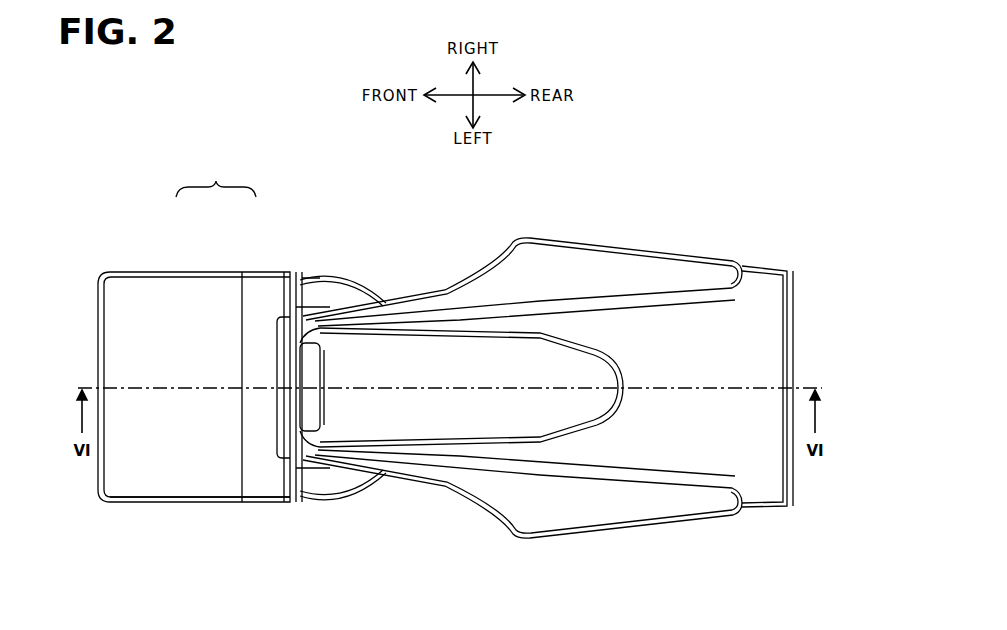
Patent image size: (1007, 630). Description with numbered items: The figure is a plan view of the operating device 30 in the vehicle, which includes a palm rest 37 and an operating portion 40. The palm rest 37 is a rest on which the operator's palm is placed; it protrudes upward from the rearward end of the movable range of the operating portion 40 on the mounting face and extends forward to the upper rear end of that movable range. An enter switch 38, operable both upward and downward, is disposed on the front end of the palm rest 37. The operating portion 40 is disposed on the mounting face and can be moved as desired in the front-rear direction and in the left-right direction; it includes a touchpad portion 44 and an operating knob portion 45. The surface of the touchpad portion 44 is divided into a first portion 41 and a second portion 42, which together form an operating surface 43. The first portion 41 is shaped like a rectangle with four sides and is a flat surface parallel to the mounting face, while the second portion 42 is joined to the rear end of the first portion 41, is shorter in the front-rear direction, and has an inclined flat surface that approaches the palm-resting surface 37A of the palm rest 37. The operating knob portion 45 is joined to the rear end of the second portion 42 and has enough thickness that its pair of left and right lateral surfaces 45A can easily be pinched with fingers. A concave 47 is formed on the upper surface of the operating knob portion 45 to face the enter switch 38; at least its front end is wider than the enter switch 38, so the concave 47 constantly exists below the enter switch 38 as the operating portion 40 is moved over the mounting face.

The operating device 30 is at (712, 188).
The palm rest 37 is at (553, 322).
The palm-resting surface 37A is at (447, 357).
The enter switch 38 is at (305, 404).
The operating portion 40 is at (110, 266).
The first portion 41 is at (183, 293).
The second portion 42 is at (260, 285).
The operating surface 43 is at (204, 172).
The touchpad portion 44 is at (225, 503).
The operating knob portion 45 is at (338, 298).
The lateral surfaces 45A is at (318, 277).
The concave 47 is at (282, 390).